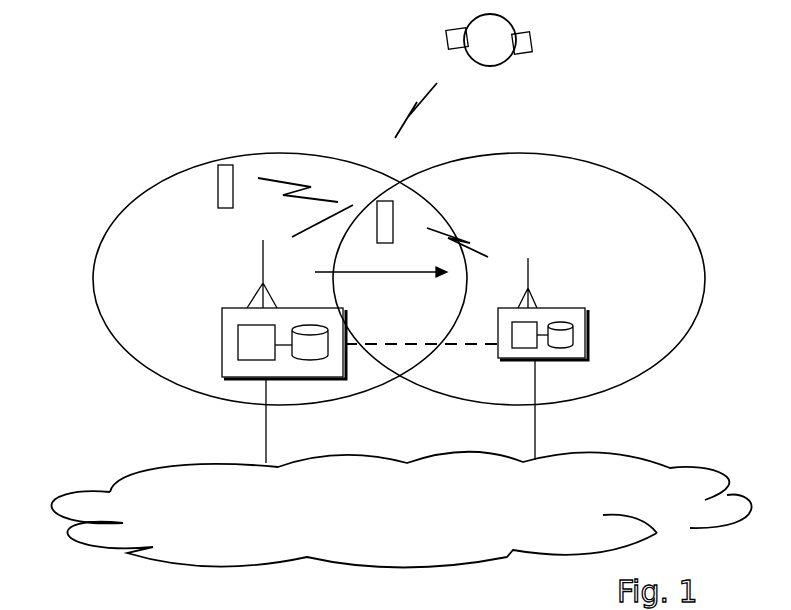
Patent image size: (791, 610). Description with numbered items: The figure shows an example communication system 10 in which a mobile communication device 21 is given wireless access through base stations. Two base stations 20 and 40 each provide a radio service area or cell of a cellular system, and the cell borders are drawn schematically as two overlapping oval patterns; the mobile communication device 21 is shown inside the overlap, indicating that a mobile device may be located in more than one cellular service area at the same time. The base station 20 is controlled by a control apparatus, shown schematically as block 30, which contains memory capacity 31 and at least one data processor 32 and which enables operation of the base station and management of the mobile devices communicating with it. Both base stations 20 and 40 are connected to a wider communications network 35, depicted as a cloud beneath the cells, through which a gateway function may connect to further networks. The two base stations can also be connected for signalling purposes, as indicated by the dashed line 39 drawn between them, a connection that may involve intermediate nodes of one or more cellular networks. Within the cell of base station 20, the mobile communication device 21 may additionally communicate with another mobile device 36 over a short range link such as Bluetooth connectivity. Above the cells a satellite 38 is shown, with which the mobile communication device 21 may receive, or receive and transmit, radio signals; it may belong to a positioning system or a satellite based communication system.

The communication system 10 is at (101, 101).
The base station 20 is at (263, 265).
The mobile communication device 21 is at (366, 178).
The control apparatus 30 is at (188, 351).
The memory capacity 31 is at (307, 353).
The data processor 32 is at (248, 336).
The wider communications network 35 is at (110, 492).
The another mobile device 36 is at (218, 165).
The satellite 38 is at (502, 28).
The dashed line 39 is at (421, 389).
The base station 40 is at (573, 320).